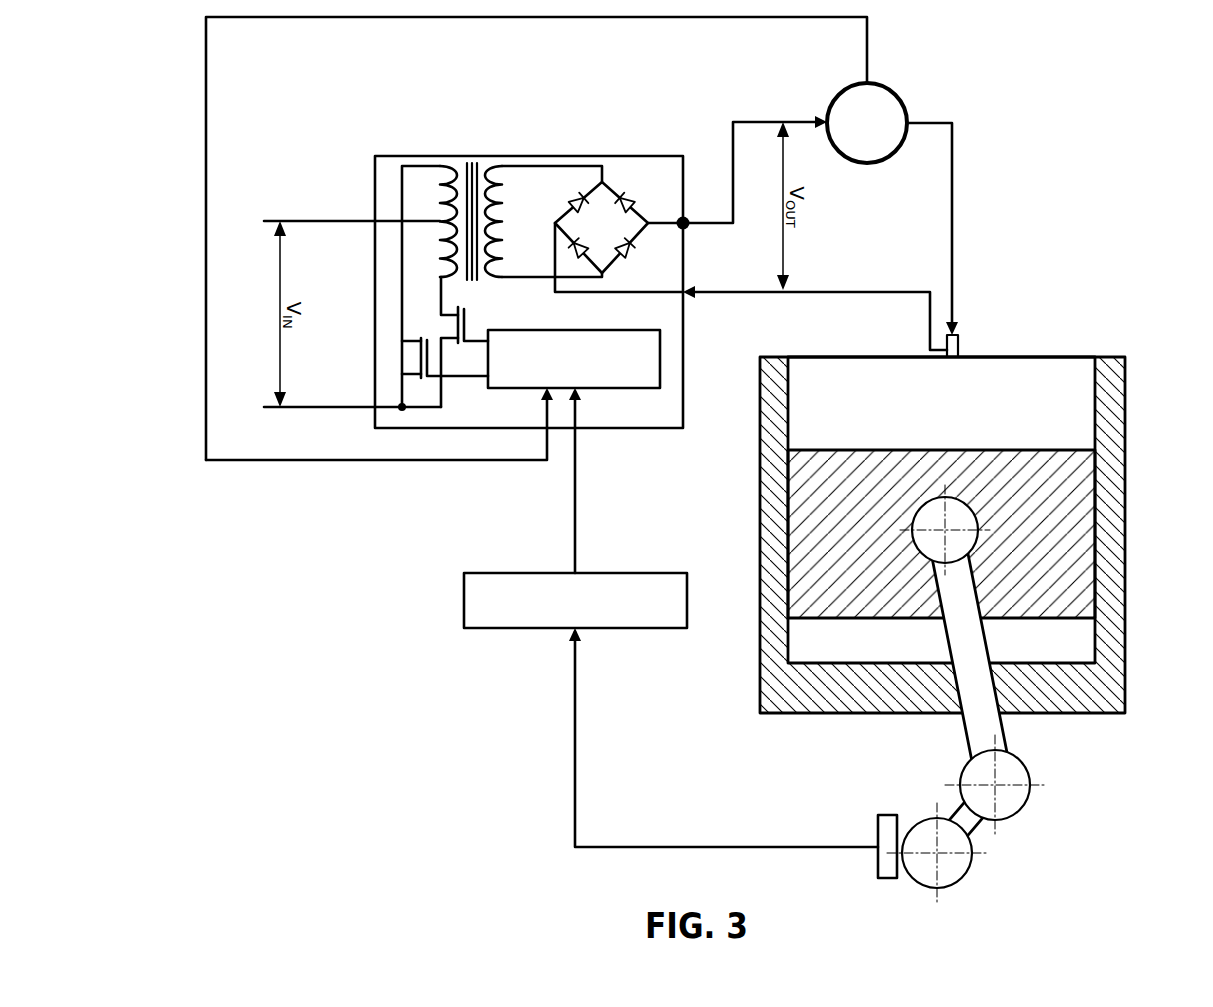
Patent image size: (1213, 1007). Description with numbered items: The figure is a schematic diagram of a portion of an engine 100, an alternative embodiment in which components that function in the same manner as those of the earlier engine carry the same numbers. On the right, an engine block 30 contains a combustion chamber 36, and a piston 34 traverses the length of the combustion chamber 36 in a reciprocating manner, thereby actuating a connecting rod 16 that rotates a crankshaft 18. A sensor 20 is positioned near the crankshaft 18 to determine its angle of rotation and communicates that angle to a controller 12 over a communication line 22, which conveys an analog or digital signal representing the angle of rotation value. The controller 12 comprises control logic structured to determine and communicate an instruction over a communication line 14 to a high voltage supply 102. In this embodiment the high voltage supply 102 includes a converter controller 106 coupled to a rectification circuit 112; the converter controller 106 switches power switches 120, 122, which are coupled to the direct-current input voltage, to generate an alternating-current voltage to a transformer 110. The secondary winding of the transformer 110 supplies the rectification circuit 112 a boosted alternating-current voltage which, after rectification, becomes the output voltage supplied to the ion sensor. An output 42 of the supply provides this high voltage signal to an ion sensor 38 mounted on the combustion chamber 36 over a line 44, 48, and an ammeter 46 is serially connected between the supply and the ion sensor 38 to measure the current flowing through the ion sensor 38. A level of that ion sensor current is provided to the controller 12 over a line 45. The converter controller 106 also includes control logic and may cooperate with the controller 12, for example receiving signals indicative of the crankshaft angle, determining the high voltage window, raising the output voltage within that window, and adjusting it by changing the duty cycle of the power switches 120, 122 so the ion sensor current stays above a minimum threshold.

The engine 100 is at (152, 210).
The line 45 is at (206, 153).
The transformer 110 is at (467, 162).
The high voltage supply 102 is at (565, 156).
The rectification circuit 112 is at (611, 180).
The line 44 is at (740, 121).
The ammeter 46 is at (903, 103).
The line 48 is at (953, 170).
The output 42 is at (686, 226).
The ion sensor 38 is at (960, 335).
The combustion chamber 36 is at (1060, 365).
The engine block 30 is at (1125, 500).
The piston 34 is at (1078, 573).
The converter controller 106 is at (660, 344).
The power switch 120 is at (445, 323).
The power switch 122 is at (408, 357).
The communication line 14 is at (573, 507).
The controller 12 is at (687, 602).
The communication line 22 is at (577, 742).
The connecting rod 16 is at (965, 727).
The sensor 20 is at (878, 820).
The crankshaft 18 is at (978, 835).